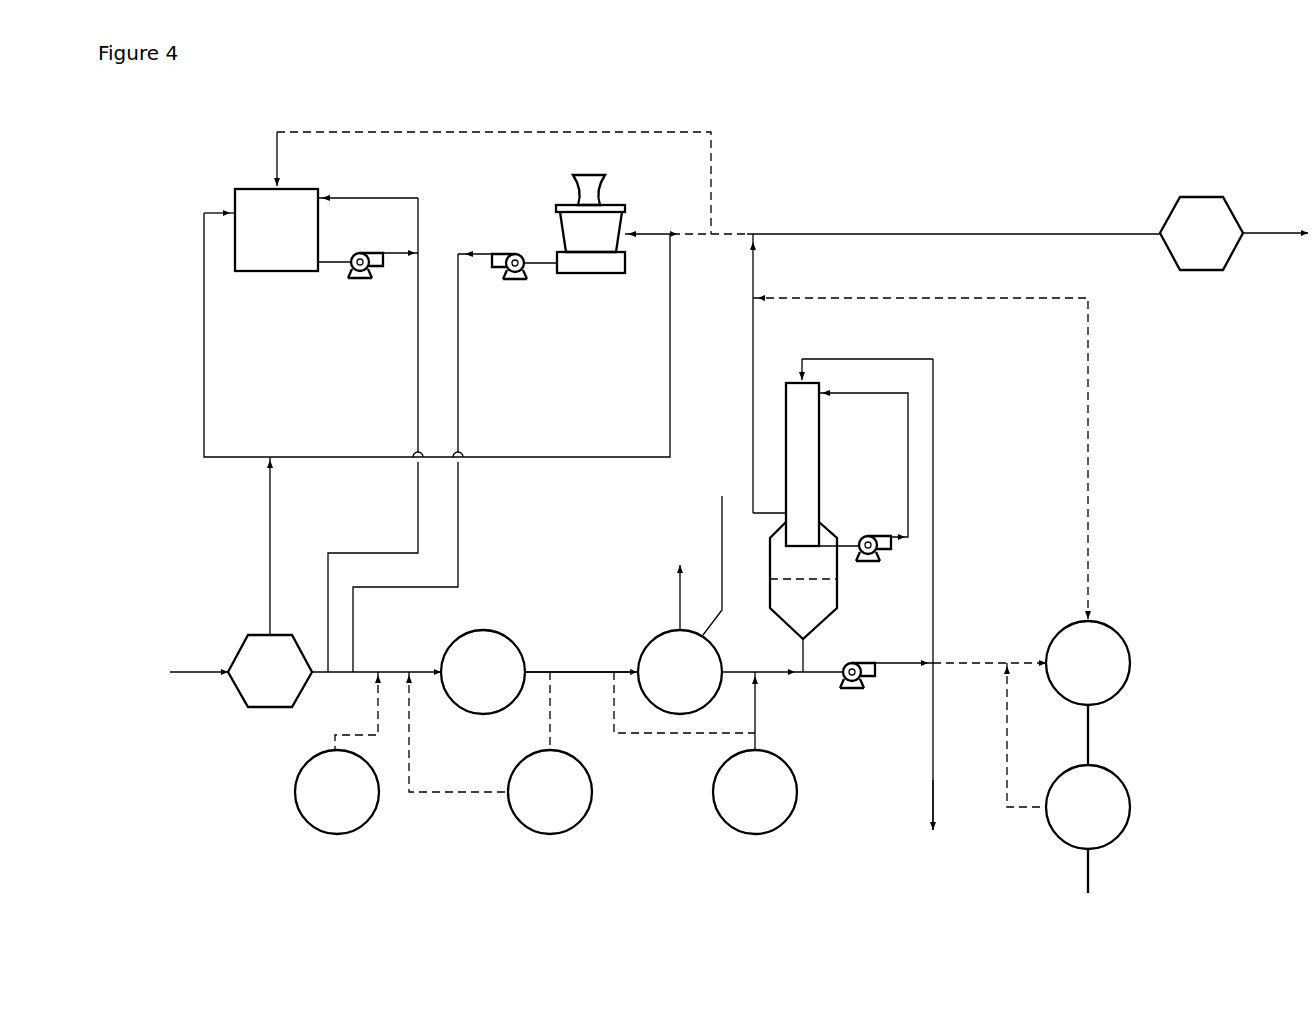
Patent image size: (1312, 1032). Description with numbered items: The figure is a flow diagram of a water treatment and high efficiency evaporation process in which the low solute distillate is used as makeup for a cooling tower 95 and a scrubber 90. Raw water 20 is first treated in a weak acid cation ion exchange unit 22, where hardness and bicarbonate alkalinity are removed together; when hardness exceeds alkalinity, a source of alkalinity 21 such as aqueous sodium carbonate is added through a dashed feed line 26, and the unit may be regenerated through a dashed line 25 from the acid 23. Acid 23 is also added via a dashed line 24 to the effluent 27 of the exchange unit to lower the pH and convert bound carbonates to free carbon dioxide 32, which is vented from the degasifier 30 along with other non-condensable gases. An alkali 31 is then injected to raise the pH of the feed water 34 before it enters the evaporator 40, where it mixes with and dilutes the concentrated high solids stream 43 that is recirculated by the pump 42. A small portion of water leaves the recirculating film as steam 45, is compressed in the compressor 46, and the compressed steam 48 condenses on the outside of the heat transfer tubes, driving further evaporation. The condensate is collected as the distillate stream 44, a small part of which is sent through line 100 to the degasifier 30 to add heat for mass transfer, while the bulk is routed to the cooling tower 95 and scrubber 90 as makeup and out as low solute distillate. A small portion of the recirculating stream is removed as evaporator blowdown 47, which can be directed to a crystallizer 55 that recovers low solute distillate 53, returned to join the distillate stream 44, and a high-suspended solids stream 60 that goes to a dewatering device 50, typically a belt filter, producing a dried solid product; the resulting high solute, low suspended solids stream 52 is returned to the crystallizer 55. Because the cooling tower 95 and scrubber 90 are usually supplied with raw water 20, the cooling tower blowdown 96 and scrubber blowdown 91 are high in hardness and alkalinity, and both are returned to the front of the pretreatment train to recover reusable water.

The raw water 20 is at (244, 643).
The source of alkalinity 21 is at (371, 759).
The weak acid cation ion exchange unit 22 is at (516, 641).
The acid 23 is at (570, 751).
The acid feed line 24 is at (556, 710).
The acid regenerant line 25 is at (419, 741).
The sodium carbonate feed line 26 is at (346, 735).
The effluent 27 is at (588, 670).
The degasifier 30 is at (721, 649).
The alkali 31 is at (796, 763).
The carbon dioxide 32 is at (685, 591).
The feed water 34 is at (768, 668).
The evaporator 40 is at (821, 426).
The pump 42 is at (858, 655).
The concentrated high solids stream 43 is at (936, 423).
The distillate stream 44 is at (716, 181).
The steam 45 is at (842, 524).
The compressor 46 is at (872, 528).
The evaporator blowdown 47 is at (936, 805).
The compressed steam 48 is at (866, 388).
The dewatering device 50 is at (1121, 775).
The high solute/low suspended solids stream 52 is at (1010, 745).
The low solute distillate 53 is at (1091, 388).
The crystallizer 55 is at (1121, 633).
The high-suspended solids stream 60 is at (1093, 735).
The scrubber 90 is at (323, 235).
The scrubber blowdown 91 is at (423, 363).
The cooling tower 95 is at (597, 273).
The cooling tower blowdown 96 is at (466, 333).
The line 100 is at (726, 580).